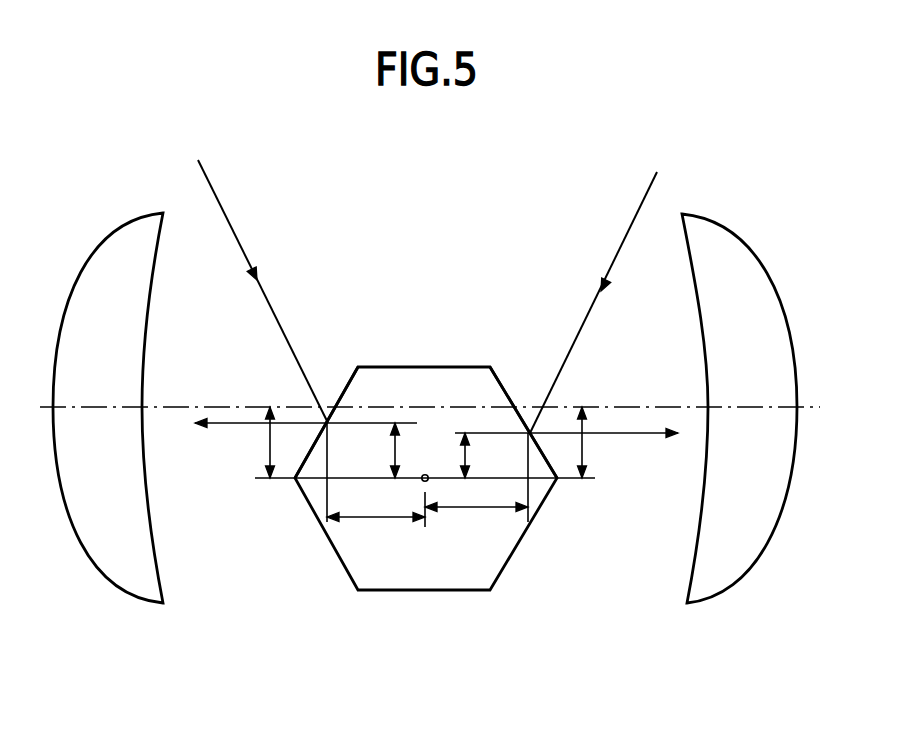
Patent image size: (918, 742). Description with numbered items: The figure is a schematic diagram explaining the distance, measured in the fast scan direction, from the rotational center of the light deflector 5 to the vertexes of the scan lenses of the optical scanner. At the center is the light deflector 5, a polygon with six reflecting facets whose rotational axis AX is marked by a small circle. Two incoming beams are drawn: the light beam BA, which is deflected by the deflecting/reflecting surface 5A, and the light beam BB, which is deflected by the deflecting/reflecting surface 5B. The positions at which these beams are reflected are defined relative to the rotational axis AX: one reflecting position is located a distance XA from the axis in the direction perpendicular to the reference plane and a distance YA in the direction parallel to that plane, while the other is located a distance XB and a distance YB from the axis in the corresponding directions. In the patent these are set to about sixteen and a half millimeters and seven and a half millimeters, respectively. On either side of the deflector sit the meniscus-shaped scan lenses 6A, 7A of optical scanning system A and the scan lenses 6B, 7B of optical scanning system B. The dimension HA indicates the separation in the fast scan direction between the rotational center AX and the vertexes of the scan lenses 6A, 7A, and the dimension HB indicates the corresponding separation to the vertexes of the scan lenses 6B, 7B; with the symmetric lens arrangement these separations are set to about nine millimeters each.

The light deflector 5 is at (398, 590).
The deflecting/reflecting surface 5A is at (490, 367).
The deflecting/reflecting surface 5B is at (358, 367).
The scan lens 6A is at (729, 442).
The scan lens 7A is at (702, 588).
The scan lens 6B is at (113, 439).
The scan lens 7B is at (140, 587).
The rotational axis AX is at (425, 474).
The light beam BA is at (643, 197).
The light beam BB is at (213, 190).
The separation HA is at (566, 442).
The separation HB is at (306, 442).
The distance XA is at (476, 524).
The distance XB is at (376, 534).
The distance YA is at (487, 455).
The distance YB is at (371, 450).